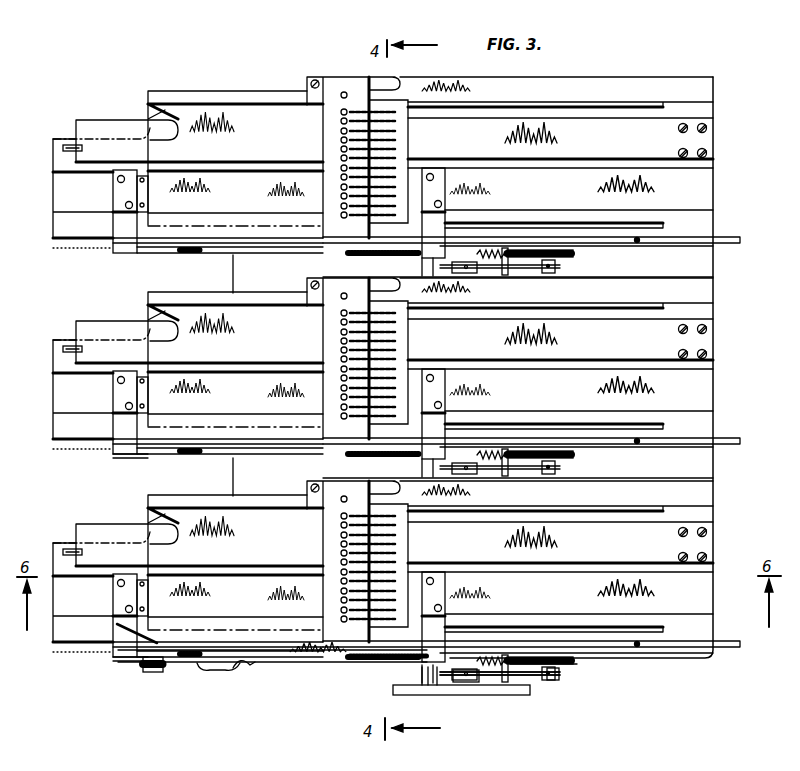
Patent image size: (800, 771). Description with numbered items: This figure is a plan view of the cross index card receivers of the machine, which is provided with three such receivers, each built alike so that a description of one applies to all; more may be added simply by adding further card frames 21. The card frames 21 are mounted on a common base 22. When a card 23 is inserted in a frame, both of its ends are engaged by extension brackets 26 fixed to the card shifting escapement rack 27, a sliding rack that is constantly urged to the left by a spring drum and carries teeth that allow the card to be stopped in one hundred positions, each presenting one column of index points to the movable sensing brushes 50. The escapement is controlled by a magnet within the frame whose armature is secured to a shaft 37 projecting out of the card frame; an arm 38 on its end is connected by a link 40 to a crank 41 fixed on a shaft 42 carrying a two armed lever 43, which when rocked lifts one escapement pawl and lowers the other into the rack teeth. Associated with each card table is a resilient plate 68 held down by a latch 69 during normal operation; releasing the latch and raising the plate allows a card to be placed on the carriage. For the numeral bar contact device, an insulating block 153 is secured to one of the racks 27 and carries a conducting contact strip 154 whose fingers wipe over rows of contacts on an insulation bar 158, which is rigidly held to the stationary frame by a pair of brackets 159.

The card frame 21 is at (690, 208).
The common base 22 is at (242, 277).
The card 23 is at (408, 146).
The extension bracket 26 is at (118, 237).
The card shifting escapement rack 27 is at (148, 458).
The shaft 37 is at (553, 682).
The arm 38 is at (559, 670).
The link 40 is at (530, 676).
The crank 41 is at (467, 682).
The shaft 42 is at (483, 684).
The two armed lever 43 is at (460, 655).
The movable sensing brushes 50 is at (395, 128).
The resilient plate 68 is at (104, 122).
The latch 69 is at (63, 150).
The insulating block 153 is at (198, 667).
The conducting contact strip 154 is at (212, 668).
The insulation bar 158 is at (277, 651).
The bracket 159 is at (157, 643).